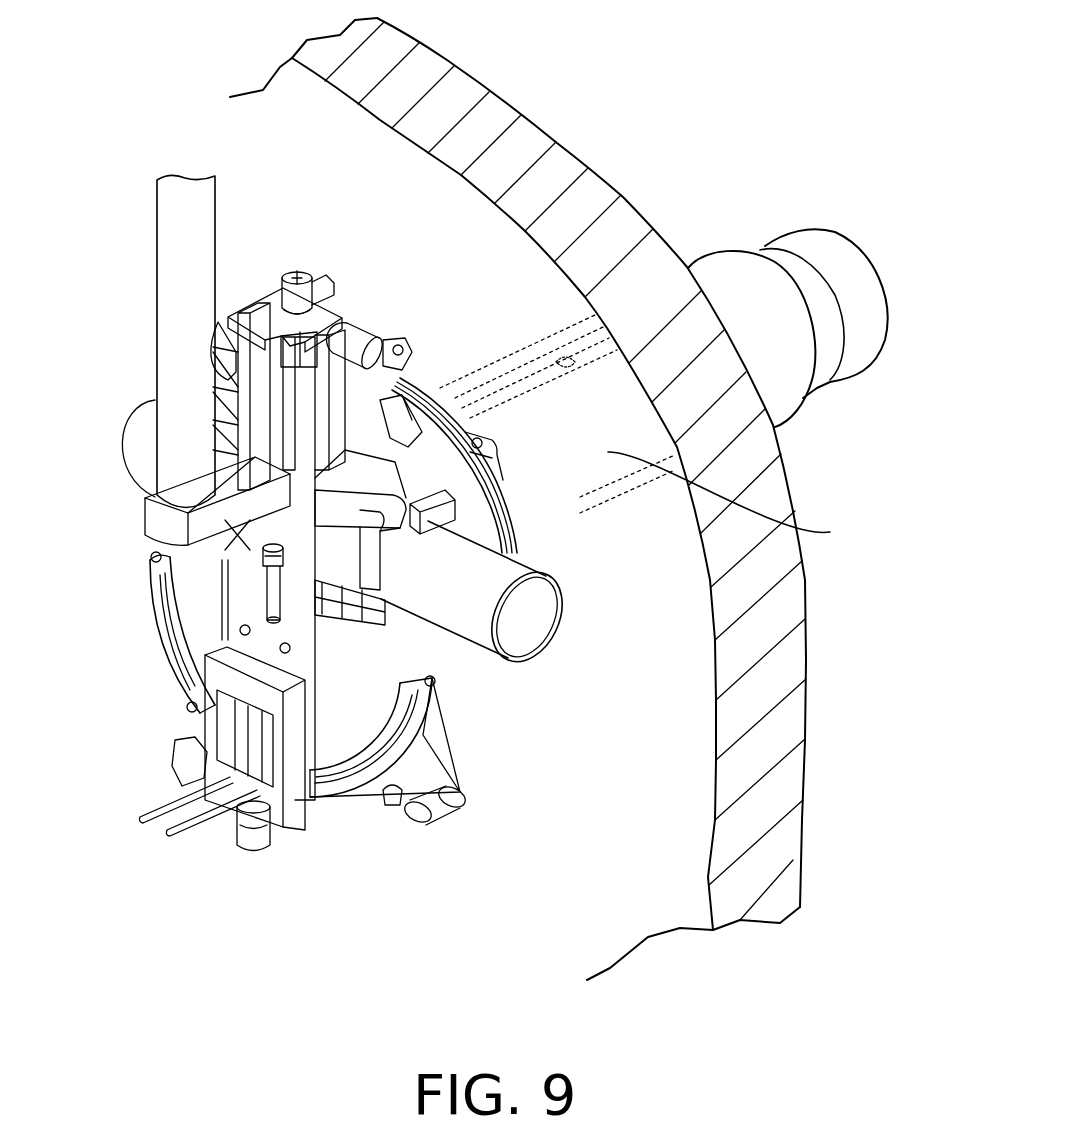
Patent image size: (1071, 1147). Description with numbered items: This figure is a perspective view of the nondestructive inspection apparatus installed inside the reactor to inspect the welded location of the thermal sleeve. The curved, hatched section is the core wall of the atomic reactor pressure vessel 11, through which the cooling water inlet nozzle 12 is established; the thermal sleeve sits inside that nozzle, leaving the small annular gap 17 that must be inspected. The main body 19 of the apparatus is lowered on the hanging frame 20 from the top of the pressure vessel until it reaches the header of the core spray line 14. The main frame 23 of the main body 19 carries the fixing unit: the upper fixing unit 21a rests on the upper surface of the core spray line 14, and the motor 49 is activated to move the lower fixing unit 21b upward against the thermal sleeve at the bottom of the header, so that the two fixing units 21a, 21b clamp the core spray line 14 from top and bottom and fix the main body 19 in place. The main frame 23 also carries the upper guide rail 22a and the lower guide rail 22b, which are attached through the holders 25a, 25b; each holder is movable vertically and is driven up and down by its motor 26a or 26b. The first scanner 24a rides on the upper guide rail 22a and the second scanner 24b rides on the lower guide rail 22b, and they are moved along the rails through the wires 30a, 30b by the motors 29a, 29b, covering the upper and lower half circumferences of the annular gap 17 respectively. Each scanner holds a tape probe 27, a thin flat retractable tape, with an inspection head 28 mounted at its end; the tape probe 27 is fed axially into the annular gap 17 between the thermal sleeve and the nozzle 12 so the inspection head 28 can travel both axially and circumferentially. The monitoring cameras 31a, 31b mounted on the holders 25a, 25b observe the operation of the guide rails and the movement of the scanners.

The atomic reactor pressure vessel 11 is at (503, 127).
The cooling water inlet nozzle 12 is at (728, 275).
The core spray line 14 is at (542, 613).
The annular gap 17 is at (738, 498).
The main body 19 is at (112, 391).
The hanging frame 20 is at (175, 277).
The upper fixing unit 21a is at (395, 552).
The lower fixing unit 21b is at (382, 607).
The upper guide rail 22a is at (456, 452).
The lower guide rail 22b is at (185, 650).
The main frame 23 is at (303, 665).
The scanner (first scanner) 24a is at (395, 350).
The scanner (second scanner) 24b is at (390, 797).
The holder 25a is at (323, 327).
The holder 25b is at (295, 807).
The motor 26a is at (297, 282).
The motor 26b is at (250, 833).
The tape probe 27 is at (522, 374).
The inspection head 28 is at (567, 362).
The motor 29a is at (215, 348).
The motor 29b is at (440, 803).
The wire 30a is at (537, 453).
The wire 30b is at (447, 733).
The monitoring camera 31a is at (363, 330).
The monitoring camera 31b is at (185, 763).
The motor 49 is at (243, 556).